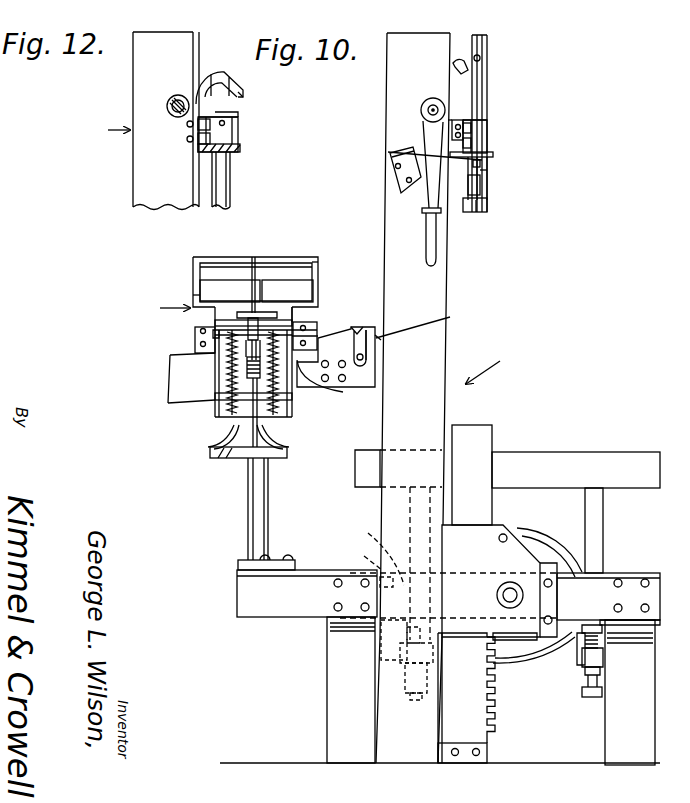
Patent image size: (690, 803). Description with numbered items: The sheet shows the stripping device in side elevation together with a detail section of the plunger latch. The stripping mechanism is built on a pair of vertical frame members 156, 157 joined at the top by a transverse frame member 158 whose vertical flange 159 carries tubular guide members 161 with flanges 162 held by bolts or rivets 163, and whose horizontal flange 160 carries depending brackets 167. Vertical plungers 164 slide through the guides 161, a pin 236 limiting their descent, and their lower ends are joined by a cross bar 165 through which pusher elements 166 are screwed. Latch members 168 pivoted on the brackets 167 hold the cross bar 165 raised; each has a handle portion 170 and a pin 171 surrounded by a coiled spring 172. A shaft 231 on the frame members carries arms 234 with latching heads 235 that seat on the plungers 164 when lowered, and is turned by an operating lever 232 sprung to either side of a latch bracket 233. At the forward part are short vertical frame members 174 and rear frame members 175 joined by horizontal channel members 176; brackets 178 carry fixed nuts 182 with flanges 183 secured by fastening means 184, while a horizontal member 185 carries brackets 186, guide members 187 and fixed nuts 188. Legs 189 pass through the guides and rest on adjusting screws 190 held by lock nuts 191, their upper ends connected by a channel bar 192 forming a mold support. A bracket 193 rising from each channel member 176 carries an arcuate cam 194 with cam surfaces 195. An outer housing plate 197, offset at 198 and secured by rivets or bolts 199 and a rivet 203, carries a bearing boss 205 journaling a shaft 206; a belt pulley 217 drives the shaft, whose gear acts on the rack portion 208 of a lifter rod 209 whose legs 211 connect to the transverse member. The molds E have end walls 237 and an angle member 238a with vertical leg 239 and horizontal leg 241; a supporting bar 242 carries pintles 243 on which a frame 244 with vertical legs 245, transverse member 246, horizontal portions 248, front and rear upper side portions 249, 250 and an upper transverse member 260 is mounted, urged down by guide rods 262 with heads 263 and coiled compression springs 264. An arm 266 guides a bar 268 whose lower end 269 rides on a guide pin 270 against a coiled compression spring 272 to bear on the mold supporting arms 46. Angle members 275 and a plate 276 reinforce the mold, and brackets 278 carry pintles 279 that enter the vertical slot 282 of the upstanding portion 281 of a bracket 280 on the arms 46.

In FIG. 10, the mold supporting arms 46 is at (168, 378).
In FIG. 10, the vertical frame member 156 is at (438, 275).
In FIG. 12, the vertical frame member 157 is at (136, 174).
In FIG. 12, the transverse frame member 158 is at (242, 148).
In FIG. 10, the transverse frame member 158 is at (496, 149).
In FIG. 12, the vertical flange 159 is at (197, 141).
In FIG. 10, the vertical flange 159 is at (452, 133).
In FIG. 12, the horizontal flange 160 is at (231, 165).
In FIG. 10, the horizontal flange 160 is at (480, 170).
In FIG. 12, the guide members 161 is at (238, 134).
In FIG. 10, the guide members 161 is at (489, 128).
In FIG. 12, the flanges 162 is at (212, 110).
In FIG. 10, the flanges 162 is at (472, 125).
In FIG. 12, the bolts or rivets 163 is at (244, 128).
In FIG. 10, the bolts or rivets 163 is at (475, 127).
In FIG. 12, the vertical plungers 164 is at (231, 198).
In FIG. 10, the vertical plungers 164 is at (488, 80).
In FIG. 10, the cross bar 165 is at (481, 184).
In FIG. 10, the pusher elements 166 is at (478, 212).
In FIG. 10, the depending brackets 167 is at (481, 163).
In FIG. 10, the latch members 168 is at (485, 200).
In FIG. 10, the handle portion 170 is at (482, 172).
In FIG. 10, the pin 171 is at (473, 144).
In FIG. 10, the coiled spring 172 is at (388, 153).
In FIG. 10, the short vertical frame members 174 is at (650, 710).
In FIG. 10, the frame members 175 is at (328, 716).
In FIG. 10, the horizontal channel members 176 is at (315, 606).
In FIG. 10, the brackets 178 is at (553, 662).
In FIG. 10, the fixed nuts 182 is at (601, 670).
In FIG. 10, the flanges 183 is at (585, 665).
In FIG. 10, the fastening means 184 is at (605, 660).
In FIG. 10, the horizontal member 185 is at (356, 557).
In FIG. 10, the brackets 186 is at (392, 640).
In FIG. 10, the guide members 187 is at (368, 554).
In FIG. 10, the fixed nuts 188 is at (400, 660).
In FIG. 10, the legs 189 is at (592, 548).
In FIG. 10, the adjusting screws 190 is at (418, 700).
In FIG. 10, the lock nuts 191 is at (400, 678).
In FIG. 10, the channel bar 192 is at (626, 437).
In FIG. 10, the bracket 193 is at (264, 516).
In FIG. 10, the arcuate cam 194 is at (240, 452).
In FIG. 10, the cam surfaces 195 is at (226, 441).
In FIG. 10, the outer housing plate 197 is at (480, 540).
In FIG. 10, the offset 198 is at (557, 604).
In FIG. 10, the rivets or bolts 199 is at (544, 620).
In FIG. 10, the rivet 203 is at (501, 541).
In FIG. 10, the bearing boss 205 is at (505, 568).
In FIG. 10, the shaft 206 is at (497, 596).
In FIG. 10, the rack portion 208 is at (490, 722).
In FIG. 10, the lifter rod 209 is at (488, 433).
In FIG. 10, the legs 211 is at (482, 755).
In FIG. 10, the belt pulley 217 is at (565, 522).
In FIG. 12, the shaft 231 is at (167, 104).
In FIG. 10, the shaft 231 is at (433, 98).
In FIG. 10, the operating lever 232 is at (430, 192).
In FIG. 10, the latch bracket 233 is at (395, 176).
In FIG. 12, the arms 234 is at (186, 92).
In FIG. 12, the latching head 235 is at (230, 79).
In FIG. 10, the latching head 235 is at (455, 65).
In FIG. 12, the pin 236 is at (226, 116).
In FIG. 10, the pin 236 is at (481, 57).
In FIG. 10, the end walls 237 is at (207, 290).
In FIG. 10, the angle member 238a is at (198, 333).
In FIG. 10, the vertical leg 239 is at (208, 350).
In FIG. 10, the horizontal leg 241 is at (213, 322).
In FIG. 10, the supporting bar 242 is at (305, 322).
In FIG. 10, the pintle 243 is at (318, 338).
In FIG. 10, the frame 244 is at (294, 411).
In FIG. 10, the vertical legs 245 is at (226, 366).
In FIG. 10, the transverse member 246 is at (213, 424).
In FIG. 10, the horizontal portions 248 is at (230, 291).
In FIG. 10, the front upper side portion 249 is at (295, 306).
In FIG. 10, the rear upper side portion 250 is at (195, 296).
In FIG. 10, the upper transverse member 260 is at (256, 258).
In FIG. 10, the guide rods 262 is at (220, 378).
In FIG. 10, the heads 263 is at (272, 335).
In FIG. 10, the coiled compression spring 264 is at (250, 392).
In FIG. 10, the arm 266 is at (275, 298).
In FIG. 10, the bar 268 is at (252, 258).
In FIG. 10, the lower end 269 is at (250, 402).
In FIG. 10, the guide pin 270 is at (292, 397).
In FIG. 10, the coiled compression spring 272 is at (266, 466).
In FIG. 10, the angle member 275 is at (333, 348).
In FIG. 10, the plate 276 is at (338, 388).
In FIG. 10, the brackets 278 is at (380, 325).
In FIG. 10, the pintles 279 is at (368, 356).
In FIG. 10, the bracket 280 is at (372, 384).
In FIG. 10, the upstanding portion 281 is at (372, 341).
In FIG. 10, the vertical slot 282 is at (432, 324).
In FIG. 10, the molds E is at (163, 298).